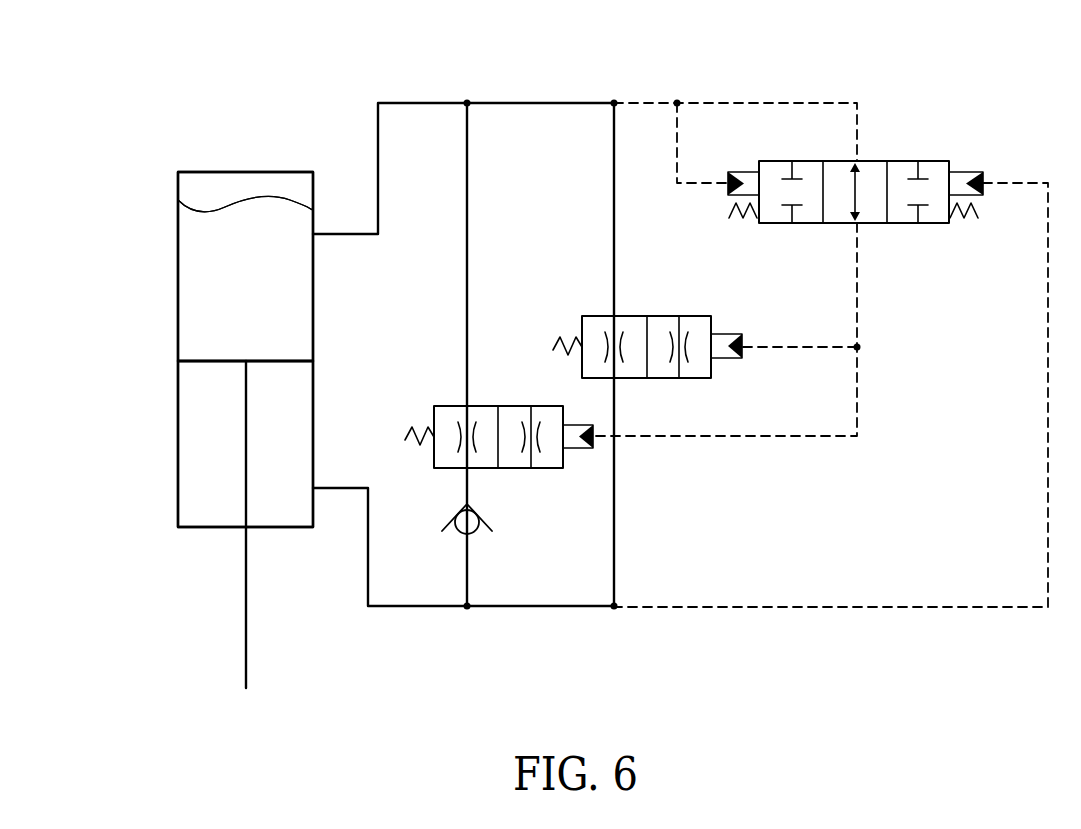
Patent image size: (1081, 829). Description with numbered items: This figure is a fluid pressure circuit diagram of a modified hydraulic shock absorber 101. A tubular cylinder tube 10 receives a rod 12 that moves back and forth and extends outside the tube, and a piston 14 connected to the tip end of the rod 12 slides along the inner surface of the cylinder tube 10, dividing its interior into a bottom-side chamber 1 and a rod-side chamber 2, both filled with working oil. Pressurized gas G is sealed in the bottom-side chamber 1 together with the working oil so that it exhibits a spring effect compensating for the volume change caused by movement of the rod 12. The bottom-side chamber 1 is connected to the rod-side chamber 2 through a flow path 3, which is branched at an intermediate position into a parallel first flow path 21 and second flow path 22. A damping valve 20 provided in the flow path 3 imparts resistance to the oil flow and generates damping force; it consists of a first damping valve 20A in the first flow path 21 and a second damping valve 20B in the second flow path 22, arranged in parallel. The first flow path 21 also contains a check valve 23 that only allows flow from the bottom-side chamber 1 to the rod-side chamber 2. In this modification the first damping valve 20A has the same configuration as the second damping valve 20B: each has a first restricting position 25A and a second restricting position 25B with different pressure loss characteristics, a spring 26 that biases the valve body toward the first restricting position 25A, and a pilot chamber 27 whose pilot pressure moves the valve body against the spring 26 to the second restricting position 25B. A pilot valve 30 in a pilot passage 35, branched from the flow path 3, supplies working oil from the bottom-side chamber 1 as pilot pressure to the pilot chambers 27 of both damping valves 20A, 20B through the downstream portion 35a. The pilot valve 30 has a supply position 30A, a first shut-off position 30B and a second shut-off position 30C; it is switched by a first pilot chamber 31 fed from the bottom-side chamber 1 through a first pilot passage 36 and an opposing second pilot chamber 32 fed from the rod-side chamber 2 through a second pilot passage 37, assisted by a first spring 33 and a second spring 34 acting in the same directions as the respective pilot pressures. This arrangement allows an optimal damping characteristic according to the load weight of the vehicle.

The hydraulic shock absorber 101 is at (195, 126).
The gas G is at (260, 185).
The bottom-side chamber 1 is at (213, 235).
The cylinder tube 10 is at (178, 280).
The piston 14 is at (210, 363).
The rod-side chamber 2 is at (218, 447).
The rod 12 is at (246, 630).
The flow path 3 is at (407, 103).
The first flow path 21 is at (466, 170).
The second flow path 22 is at (614, 170).
The check valve 23 is at (445, 523).
The damping valve 20 is at (556, 374).
The first damping valve 20A is at (435, 398).
The second damping valve 20B is at (598, 310).
The first restricting position 25A is at (487, 406).
The second restricting position 25B is at (547, 406).
The spring 26 is at (415, 425).
The pilot chamber 27 is at (571, 448).
The pilot valve 30 is at (885, 226).
The supply position 30A is at (875, 161).
The first shut-off position 30B is at (772, 161).
The second shut-off position 30C is at (936, 161).
The first pilot chamber 31 is at (746, 183).
The second pilot chamber 32 is at (962, 183).
The first spring 33 is at (745, 212).
The second spring 34 is at (965, 210).
The pilot passage 35 is at (692, 100).
The downstream portion of the pilot passage 35a is at (858, 322).
The first pilot passage 36 is at (688, 185).
The second pilot passage 37 is at (1047, 357).